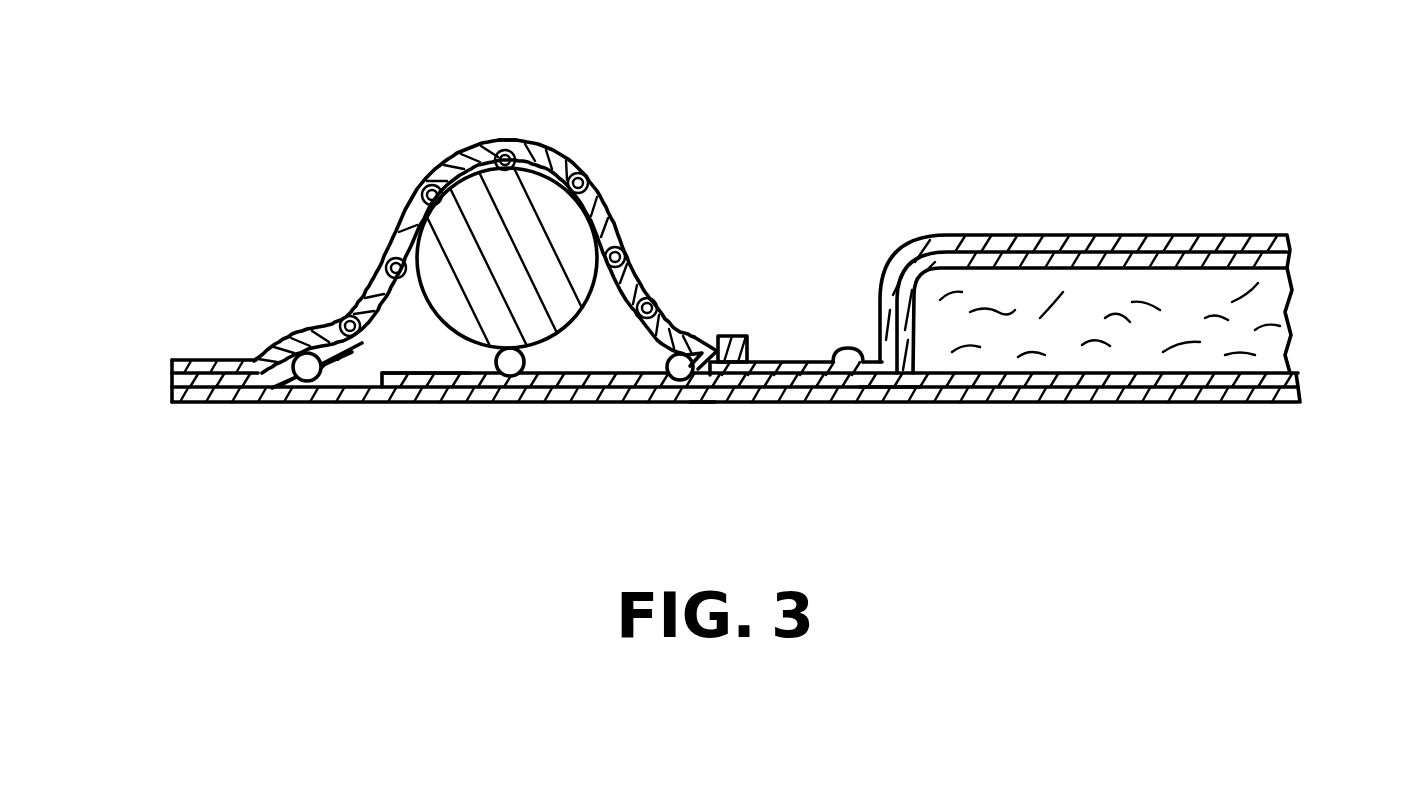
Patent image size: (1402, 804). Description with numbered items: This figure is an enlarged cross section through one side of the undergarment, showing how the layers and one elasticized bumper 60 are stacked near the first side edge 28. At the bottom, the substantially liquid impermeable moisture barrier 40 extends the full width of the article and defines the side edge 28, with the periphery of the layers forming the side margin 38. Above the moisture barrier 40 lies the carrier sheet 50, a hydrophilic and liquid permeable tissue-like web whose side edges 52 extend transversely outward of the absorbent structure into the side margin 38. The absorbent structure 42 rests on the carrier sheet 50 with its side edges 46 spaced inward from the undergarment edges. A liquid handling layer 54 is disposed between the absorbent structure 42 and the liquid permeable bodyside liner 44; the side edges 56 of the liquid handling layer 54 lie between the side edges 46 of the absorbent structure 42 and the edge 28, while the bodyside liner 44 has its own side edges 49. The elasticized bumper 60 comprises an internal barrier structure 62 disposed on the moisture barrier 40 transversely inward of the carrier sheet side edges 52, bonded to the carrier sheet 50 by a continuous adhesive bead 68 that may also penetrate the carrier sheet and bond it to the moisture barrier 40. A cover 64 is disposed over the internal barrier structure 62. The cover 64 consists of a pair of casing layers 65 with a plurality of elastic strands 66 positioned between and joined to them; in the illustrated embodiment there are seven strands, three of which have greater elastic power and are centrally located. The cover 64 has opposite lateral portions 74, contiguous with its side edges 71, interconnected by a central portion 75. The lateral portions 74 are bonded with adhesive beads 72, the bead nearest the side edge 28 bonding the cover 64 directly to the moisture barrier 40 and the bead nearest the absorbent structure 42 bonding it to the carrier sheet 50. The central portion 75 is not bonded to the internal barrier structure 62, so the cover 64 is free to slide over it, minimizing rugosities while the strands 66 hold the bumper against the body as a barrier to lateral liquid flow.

The first side edge 28 is at (170, 388).
The side margin 38 is at (234, 402).
The moisture barrier 40 is at (1193, 400).
The absorbent structure 42 is at (1268, 334).
The bodyside liner 44 is at (1062, 236).
The side edge of absorbent structure 46 is at (887, 400).
The side edge of bodyside liner 49 is at (700, 403).
The carrier sheet 50 is at (1007, 397).
The side edge of carrier sheet 52 is at (360, 403).
The liquid handling layer 54 is at (1200, 240).
The side edge of liquid handling layer 56 is at (830, 347).
The elasticized bumper 60 is at (408, 203).
The internal barrier structure 62 is at (480, 197).
The cover 64 is at (341, 311).
The casing layer 65 is at (256, 362).
The elastic strand 66 is at (617, 245).
The adhesive bead 68 is at (489, 400).
The side edge of cover 71 is at (172, 367).
The adhesive bead 72 is at (291, 400).
The lateral portion 74 is at (174, 362).
The central portion 75 is at (550, 150).